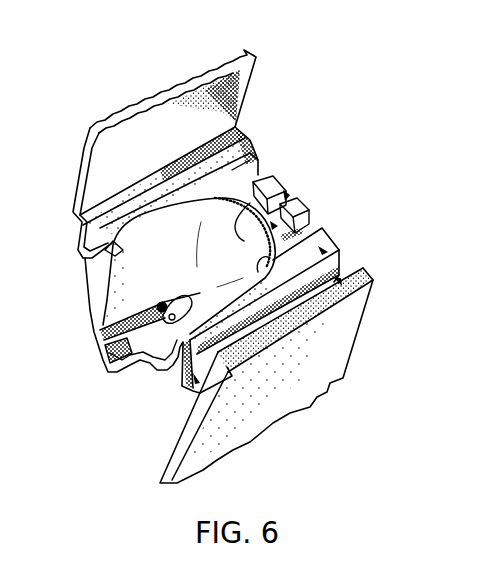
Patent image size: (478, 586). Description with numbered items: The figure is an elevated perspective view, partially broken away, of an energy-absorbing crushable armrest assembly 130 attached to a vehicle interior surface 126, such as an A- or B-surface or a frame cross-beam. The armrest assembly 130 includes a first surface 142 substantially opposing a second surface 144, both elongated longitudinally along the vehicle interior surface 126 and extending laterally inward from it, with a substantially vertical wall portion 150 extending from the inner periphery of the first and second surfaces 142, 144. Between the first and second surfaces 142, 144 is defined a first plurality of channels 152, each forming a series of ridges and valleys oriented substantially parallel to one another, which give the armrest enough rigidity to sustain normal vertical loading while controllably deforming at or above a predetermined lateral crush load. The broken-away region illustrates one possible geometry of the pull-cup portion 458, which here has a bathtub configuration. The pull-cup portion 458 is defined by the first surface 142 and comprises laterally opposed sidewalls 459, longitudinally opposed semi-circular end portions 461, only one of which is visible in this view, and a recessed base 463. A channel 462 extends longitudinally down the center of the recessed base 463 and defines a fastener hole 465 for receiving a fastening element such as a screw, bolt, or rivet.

The vehicle interior surface 126 is at (240, 70).
The crushable armrest assembly 130 is at (317, 132).
The first surface 142 is at (250, 165).
The second surface 144 is at (188, 368).
The substantially vertical wall portion 150 is at (346, 350).
The first plurality of channels 152 is at (112, 177).
The pull-cup portion 458 is at (322, 230).
The laterally opposed sidewalls 459 is at (107, 333).
The semi-circular end portions 461 is at (286, 190).
The channel 462 is at (186, 300).
The recessed base 463 is at (135, 316).
The fastener hole 465 is at (247, 357).